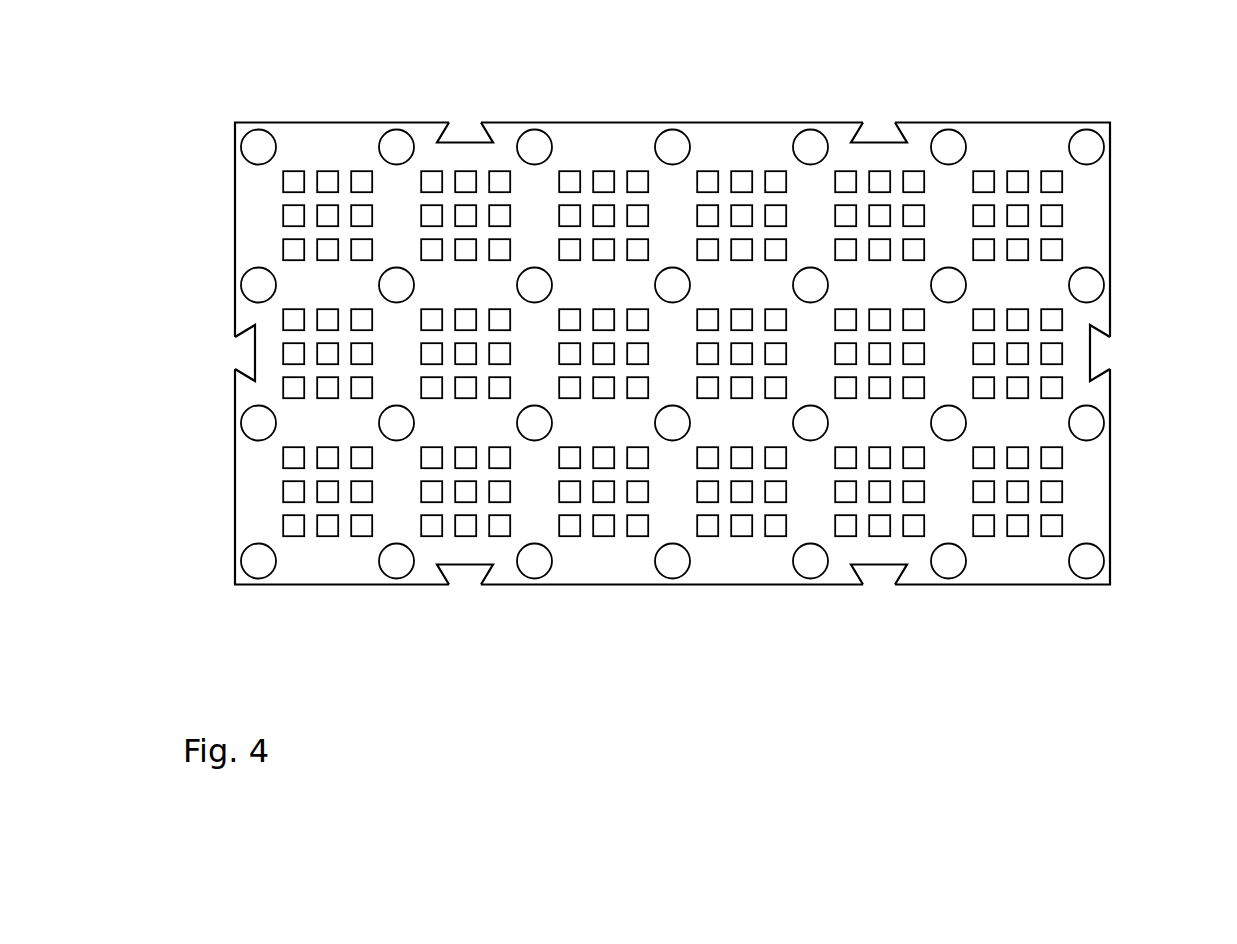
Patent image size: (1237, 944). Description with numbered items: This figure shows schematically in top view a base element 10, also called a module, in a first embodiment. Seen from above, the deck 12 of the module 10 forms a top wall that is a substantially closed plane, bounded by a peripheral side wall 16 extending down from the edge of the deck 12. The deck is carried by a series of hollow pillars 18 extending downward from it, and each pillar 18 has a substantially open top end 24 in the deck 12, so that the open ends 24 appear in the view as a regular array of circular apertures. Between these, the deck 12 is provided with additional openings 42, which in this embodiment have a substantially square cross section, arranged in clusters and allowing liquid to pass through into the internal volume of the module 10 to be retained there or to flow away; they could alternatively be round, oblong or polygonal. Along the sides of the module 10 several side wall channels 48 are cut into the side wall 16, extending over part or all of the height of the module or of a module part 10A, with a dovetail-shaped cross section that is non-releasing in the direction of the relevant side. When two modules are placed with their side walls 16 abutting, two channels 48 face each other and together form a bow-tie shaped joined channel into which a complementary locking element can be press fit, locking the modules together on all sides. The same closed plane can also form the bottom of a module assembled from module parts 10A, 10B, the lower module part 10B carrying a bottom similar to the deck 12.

The base element 10 is at (696, 355).
The module part 10A is at (671, 355).
The lower module part 10B is at (671, 355).
The deck 12 is at (671, 355).
The peripheral side wall 16 is at (330, 122).
The pillar 18 is at (690, 147).
The open top end 24 is at (534, 147).
The opening 42 is at (1050, 216).
The side wall channel 48 is at (465, 132).